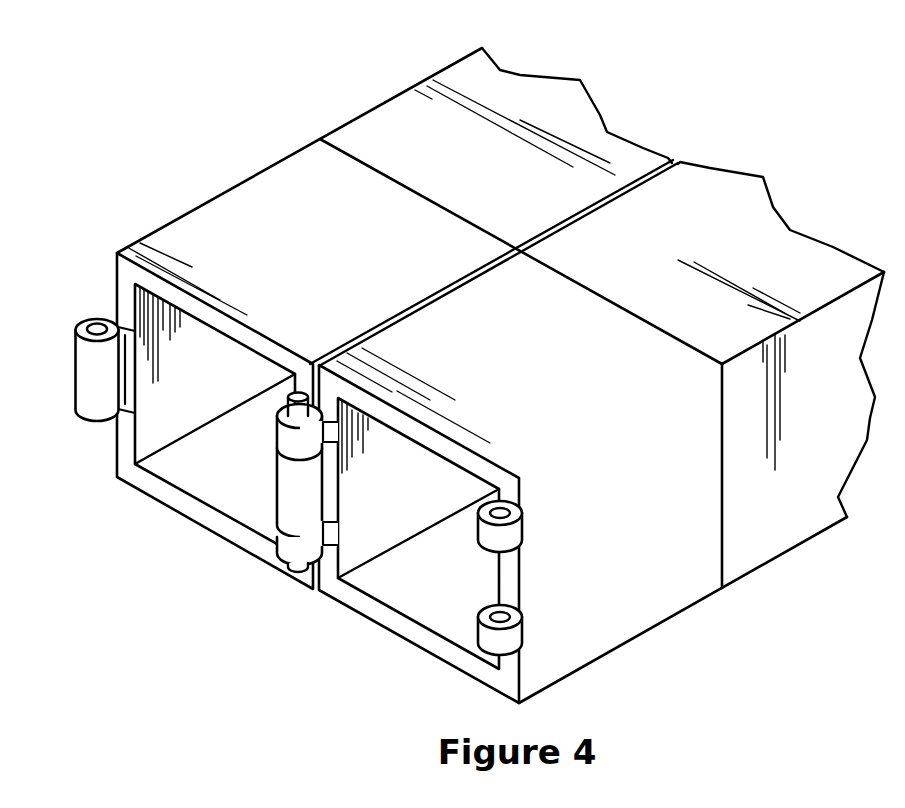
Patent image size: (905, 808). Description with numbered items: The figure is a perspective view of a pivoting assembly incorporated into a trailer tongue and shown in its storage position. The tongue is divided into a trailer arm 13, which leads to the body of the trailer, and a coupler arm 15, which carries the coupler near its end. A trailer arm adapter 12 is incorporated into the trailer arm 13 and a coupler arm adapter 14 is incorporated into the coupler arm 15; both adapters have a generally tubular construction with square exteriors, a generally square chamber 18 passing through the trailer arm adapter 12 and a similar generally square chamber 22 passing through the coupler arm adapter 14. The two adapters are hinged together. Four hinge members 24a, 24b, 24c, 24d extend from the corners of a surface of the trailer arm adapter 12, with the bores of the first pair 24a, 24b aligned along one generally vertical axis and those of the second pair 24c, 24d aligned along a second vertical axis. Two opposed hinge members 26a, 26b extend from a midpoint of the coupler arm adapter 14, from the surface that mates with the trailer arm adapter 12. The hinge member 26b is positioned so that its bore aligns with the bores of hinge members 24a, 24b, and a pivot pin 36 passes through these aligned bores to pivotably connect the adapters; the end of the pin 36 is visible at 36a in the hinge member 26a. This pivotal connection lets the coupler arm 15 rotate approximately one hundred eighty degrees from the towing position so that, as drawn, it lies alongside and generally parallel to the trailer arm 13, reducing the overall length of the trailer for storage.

The trailer arm adapter 12 is at (638, 608).
The trailer arm 13 is at (755, 527).
The coupler arm adapter 14 is at (247, 210).
The coupler arm 15 is at (411, 124).
The chamber 18 is at (429, 470).
The chamber 22 is at (163, 320).
The hinge member 24a is at (292, 438).
The hinge member 24b is at (292, 548).
The hinge member 24c is at (504, 533).
The hinge member 24d is at (501, 647).
The hinge member 26a is at (95, 387).
The hinge member 26b is at (302, 493).
The pivot pin 36 is at (303, 395).
The pin opening 36a is at (93, 328).